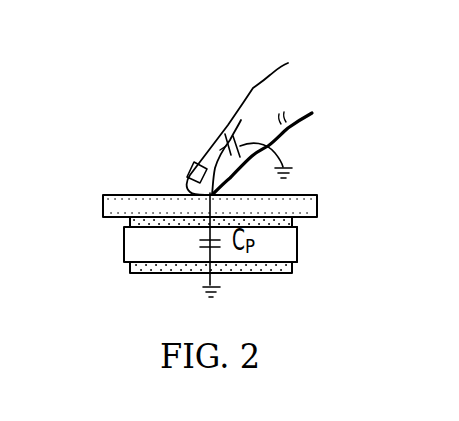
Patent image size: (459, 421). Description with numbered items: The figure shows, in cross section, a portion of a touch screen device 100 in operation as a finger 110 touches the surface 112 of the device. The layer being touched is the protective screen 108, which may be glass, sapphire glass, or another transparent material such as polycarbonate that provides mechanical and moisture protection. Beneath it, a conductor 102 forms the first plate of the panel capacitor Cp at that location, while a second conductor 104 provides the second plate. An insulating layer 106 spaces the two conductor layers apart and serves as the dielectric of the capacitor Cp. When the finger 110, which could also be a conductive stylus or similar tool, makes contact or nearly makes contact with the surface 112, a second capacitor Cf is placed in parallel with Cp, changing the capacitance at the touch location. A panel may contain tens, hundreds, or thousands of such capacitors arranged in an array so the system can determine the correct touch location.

The touch screen device 100 is at (141, 114).
The conductor 102 is at (293, 222).
The conductor 104 is at (168, 273).
The insulating layer 106 is at (123, 243).
The protective screen 108 is at (103, 202).
The finger 110 is at (243, 103).
The surface 112 is at (145, 195).